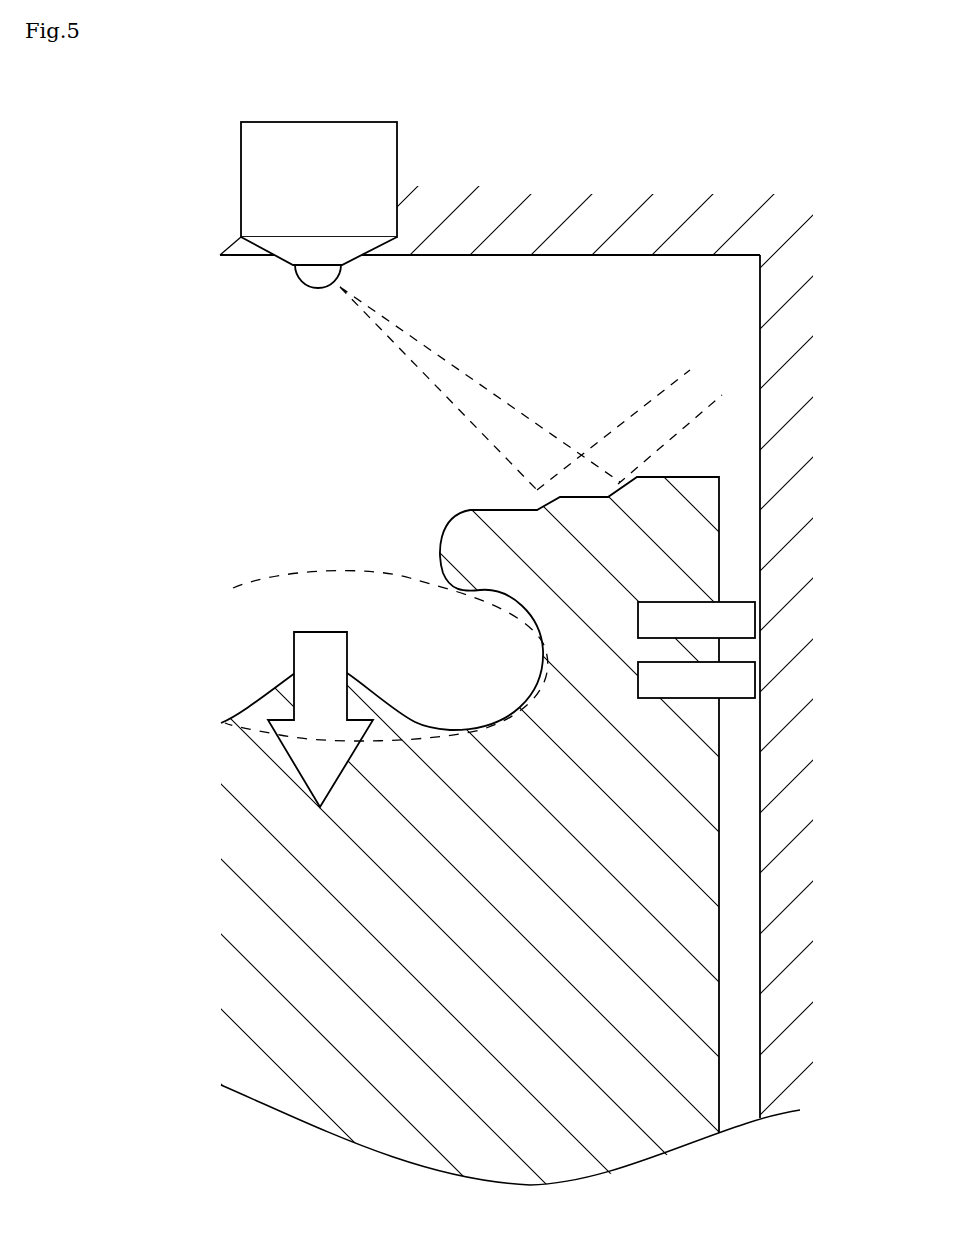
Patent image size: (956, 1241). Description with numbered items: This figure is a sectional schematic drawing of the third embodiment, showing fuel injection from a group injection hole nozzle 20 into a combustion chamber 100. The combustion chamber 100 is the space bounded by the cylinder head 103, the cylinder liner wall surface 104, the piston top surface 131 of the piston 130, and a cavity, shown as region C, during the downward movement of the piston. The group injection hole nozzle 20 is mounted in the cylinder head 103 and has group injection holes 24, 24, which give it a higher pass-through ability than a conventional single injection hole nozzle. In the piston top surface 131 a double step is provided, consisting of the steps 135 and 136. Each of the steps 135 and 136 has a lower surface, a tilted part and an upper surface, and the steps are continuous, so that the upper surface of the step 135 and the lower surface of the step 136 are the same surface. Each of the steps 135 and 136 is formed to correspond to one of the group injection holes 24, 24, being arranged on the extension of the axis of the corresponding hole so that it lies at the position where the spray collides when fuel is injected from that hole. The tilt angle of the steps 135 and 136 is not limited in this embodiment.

The group injection hole nozzle 20 is at (397, 177).
The group injection hole 24 is at (343, 273).
The combustion chamber 100 is at (347, 436).
The cylinder head 103 is at (230, 257).
The cylinder liner wall surface 104 is at (760, 295).
The piston 130 is at (450, 827).
The piston top surface 131 is at (687, 452).
The step 135 is at (533, 492).
The step 136 is at (620, 480).
The cavity C is at (386, 652).